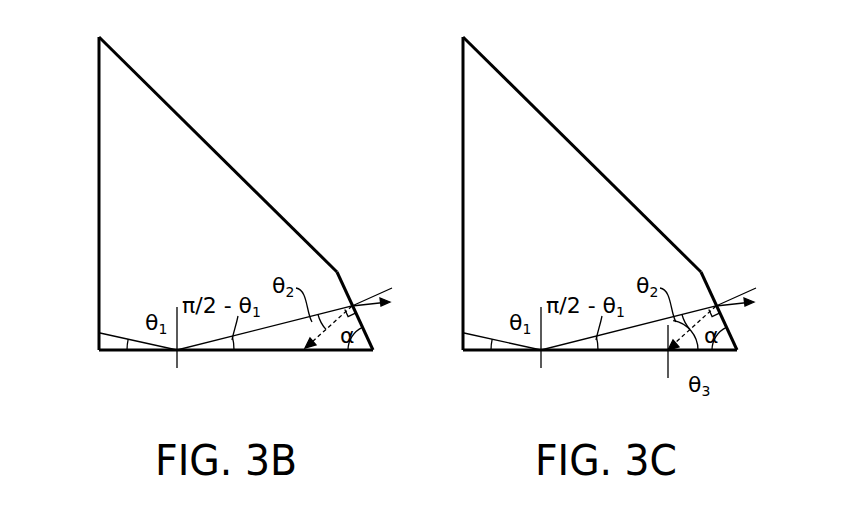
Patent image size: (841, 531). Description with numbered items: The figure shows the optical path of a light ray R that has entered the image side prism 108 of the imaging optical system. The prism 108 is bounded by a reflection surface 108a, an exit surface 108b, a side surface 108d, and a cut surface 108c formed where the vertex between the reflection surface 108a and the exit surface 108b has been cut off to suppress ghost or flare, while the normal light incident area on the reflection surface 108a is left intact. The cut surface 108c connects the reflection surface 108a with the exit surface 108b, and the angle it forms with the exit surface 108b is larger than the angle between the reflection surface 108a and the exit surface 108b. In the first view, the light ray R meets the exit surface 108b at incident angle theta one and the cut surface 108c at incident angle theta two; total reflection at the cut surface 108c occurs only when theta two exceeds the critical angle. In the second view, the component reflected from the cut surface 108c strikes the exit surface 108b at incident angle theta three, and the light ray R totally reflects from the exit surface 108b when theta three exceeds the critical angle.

In FIG. 3B, the image side prism 108 is at (233, 224).
In FIG. 3C, the image side prism 108 is at (597, 224).
In FIG. 3B, the reflection surface 108a is at (270, 152).
In FIG. 3C, the reflection surface 108a is at (582, 154).
In FIG. 3B, the exit surface 108b is at (276, 352).
In FIG. 3C, the exit surface 108b is at (600, 380).
In FIG. 3B, the cut surface 108c is at (366, 334).
In FIG. 3C, the cut surface 108c is at (750, 311).
In FIG. 3B, the vertical side surface of prism 108d is at (100, 117).
In FIG. 3C, the vertical side surface of prism 108d is at (430, 193).
In FIG. 3B, the light ray R is at (123, 352).
In FIG. 3C, the light ray R is at (608, 350).